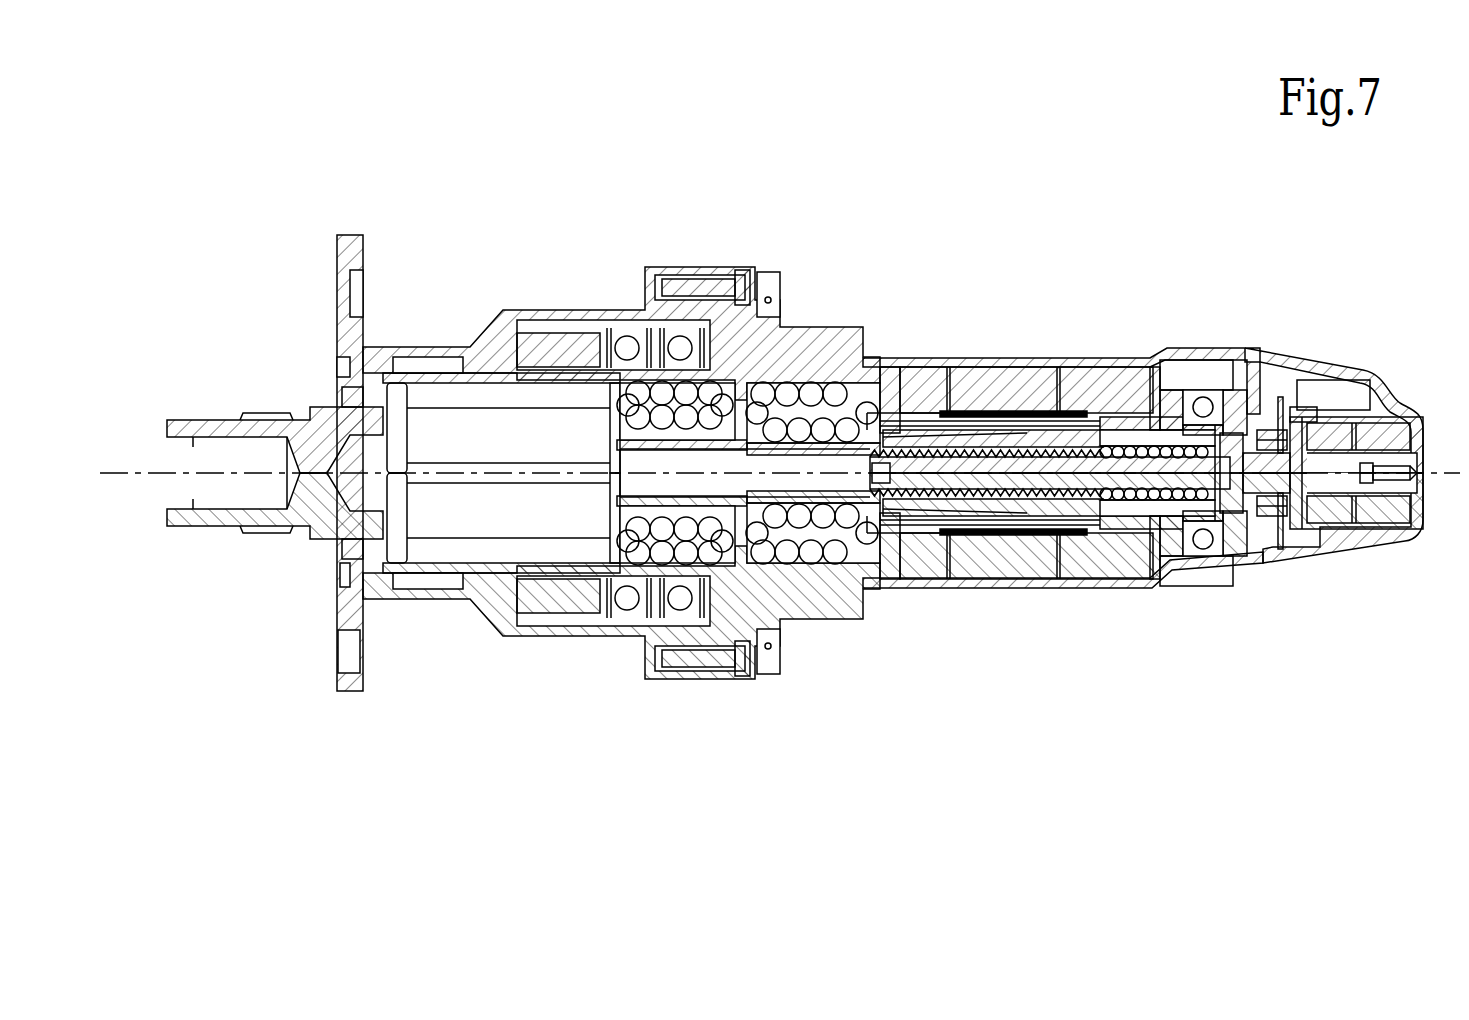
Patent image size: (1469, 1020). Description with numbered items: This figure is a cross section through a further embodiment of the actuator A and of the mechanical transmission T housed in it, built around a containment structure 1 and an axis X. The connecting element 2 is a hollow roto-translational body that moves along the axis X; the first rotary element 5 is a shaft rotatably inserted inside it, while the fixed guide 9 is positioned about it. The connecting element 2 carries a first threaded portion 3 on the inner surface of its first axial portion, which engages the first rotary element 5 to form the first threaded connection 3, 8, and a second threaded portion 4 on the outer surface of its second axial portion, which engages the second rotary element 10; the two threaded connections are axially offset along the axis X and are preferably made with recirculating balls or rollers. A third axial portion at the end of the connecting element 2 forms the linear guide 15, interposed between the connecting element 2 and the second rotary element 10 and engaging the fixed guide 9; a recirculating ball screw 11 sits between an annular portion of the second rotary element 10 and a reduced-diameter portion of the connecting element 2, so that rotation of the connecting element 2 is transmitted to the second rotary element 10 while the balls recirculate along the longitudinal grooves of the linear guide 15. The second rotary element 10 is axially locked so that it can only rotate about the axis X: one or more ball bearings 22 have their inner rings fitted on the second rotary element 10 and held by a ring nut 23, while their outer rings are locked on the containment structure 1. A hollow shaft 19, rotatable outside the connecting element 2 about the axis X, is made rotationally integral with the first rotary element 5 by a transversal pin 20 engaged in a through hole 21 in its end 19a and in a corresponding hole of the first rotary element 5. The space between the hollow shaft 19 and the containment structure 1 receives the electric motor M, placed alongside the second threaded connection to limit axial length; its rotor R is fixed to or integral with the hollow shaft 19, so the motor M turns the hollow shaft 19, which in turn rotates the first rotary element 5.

The containment structure 1 is at (1103, 352).
The connecting element 2 is at (637, 508).
The first threaded portion 3 is at (1104, 497).
The second threaded portion 4 is at (858, 405).
The first rotary element 5 is at (1007, 503).
The first threaded connection 8 is at (1046, 498).
The fixed guide 9 is at (884, 565).
The second rotary element 10 is at (493, 570).
The recirculating ball screw 11 is at (667, 393).
The linear guide 15 is at (643, 622).
The hollow shaft 19 is at (1162, 523).
The end 19a is at (1229, 513).
The transversal pin 20 is at (1238, 438).
The through hole 21 is at (1278, 430).
The bearings 22 is at (672, 623).
The ring nut 23 is at (720, 582).
The actuator A is at (434, 186).
The transmission T is at (893, 278).
The electric motor M is at (1030, 372).
The rotor R is at (972, 405).
The axis X is at (133, 465).